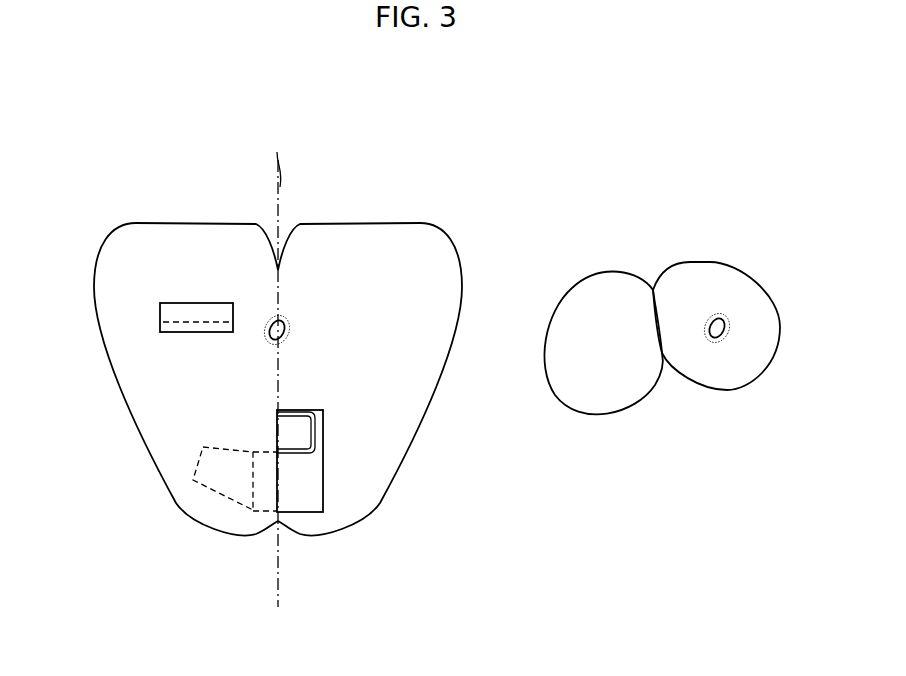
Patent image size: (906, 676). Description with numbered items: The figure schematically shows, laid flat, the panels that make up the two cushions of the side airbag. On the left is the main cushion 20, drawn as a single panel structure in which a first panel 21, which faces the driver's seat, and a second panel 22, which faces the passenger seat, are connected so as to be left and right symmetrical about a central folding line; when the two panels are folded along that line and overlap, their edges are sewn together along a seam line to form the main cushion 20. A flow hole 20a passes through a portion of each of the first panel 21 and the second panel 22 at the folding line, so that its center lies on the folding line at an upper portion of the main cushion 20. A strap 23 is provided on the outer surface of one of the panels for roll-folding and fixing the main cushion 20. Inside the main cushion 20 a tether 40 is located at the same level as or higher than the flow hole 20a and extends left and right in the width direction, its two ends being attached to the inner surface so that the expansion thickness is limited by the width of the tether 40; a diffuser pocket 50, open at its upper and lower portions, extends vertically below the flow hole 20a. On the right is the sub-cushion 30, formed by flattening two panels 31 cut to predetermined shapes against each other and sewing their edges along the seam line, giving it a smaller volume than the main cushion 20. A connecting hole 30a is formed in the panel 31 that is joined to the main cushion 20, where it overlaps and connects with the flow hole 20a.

The main cushion 20 is at (200, 165).
The flow hole 20a is at (284, 330).
The first panel 21 is at (421, 242).
The second panel 22 is at (135, 245).
The strap 23 is at (197, 463).
The sub-cushion 30 is at (653, 205).
The connecting hole 30a is at (723, 338).
The panel 31 is at (605, 292).
The tether 40 is at (170, 313).
The diffuser pocket 50 is at (312, 488).